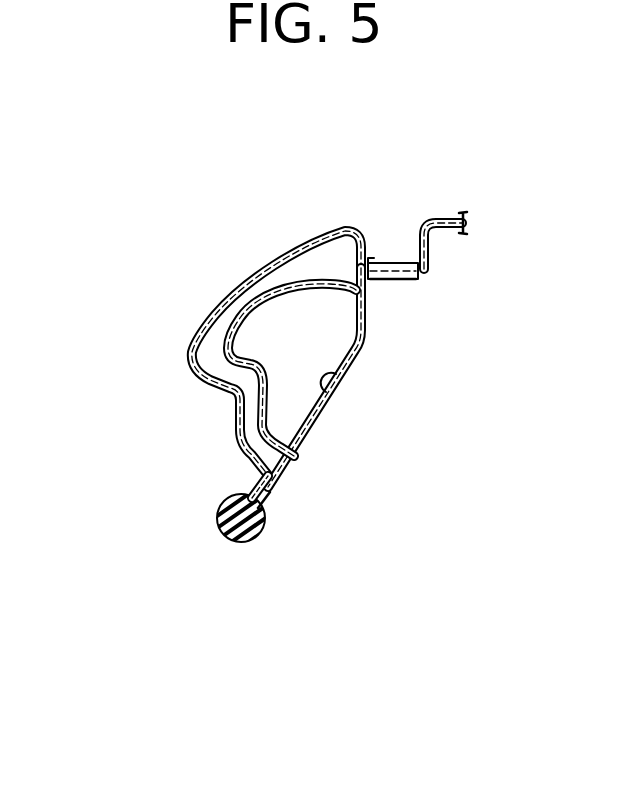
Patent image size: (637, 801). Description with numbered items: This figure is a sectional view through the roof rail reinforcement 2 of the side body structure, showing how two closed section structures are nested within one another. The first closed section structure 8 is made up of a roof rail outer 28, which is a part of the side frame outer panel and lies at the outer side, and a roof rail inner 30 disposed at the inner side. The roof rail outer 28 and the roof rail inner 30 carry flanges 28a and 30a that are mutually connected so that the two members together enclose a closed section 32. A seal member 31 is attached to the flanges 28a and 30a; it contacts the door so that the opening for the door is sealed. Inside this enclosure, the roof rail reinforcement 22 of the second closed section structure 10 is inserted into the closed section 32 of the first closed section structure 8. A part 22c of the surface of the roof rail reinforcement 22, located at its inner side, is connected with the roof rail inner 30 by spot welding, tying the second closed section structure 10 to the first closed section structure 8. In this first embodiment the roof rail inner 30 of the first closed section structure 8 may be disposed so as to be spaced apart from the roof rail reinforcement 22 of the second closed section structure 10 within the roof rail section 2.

The roof rail reinforcement 2 is at (269, 203).
The first closed section structure 8 is at (283, 350).
The roof rail outer 28 is at (232, 293).
The roof rail inner 30 is at (312, 436).
The second closed section structure 10 is at (258, 368).
The roof rail reinforcement 22 is at (258, 368).
The part of the surface of the roof rail reinforcement 22c is at (345, 376).
The flange 28a is at (380, 264).
The flange 30a is at (398, 282).
The seal member 31 is at (222, 540).
The closed section 32 is at (215, 362).